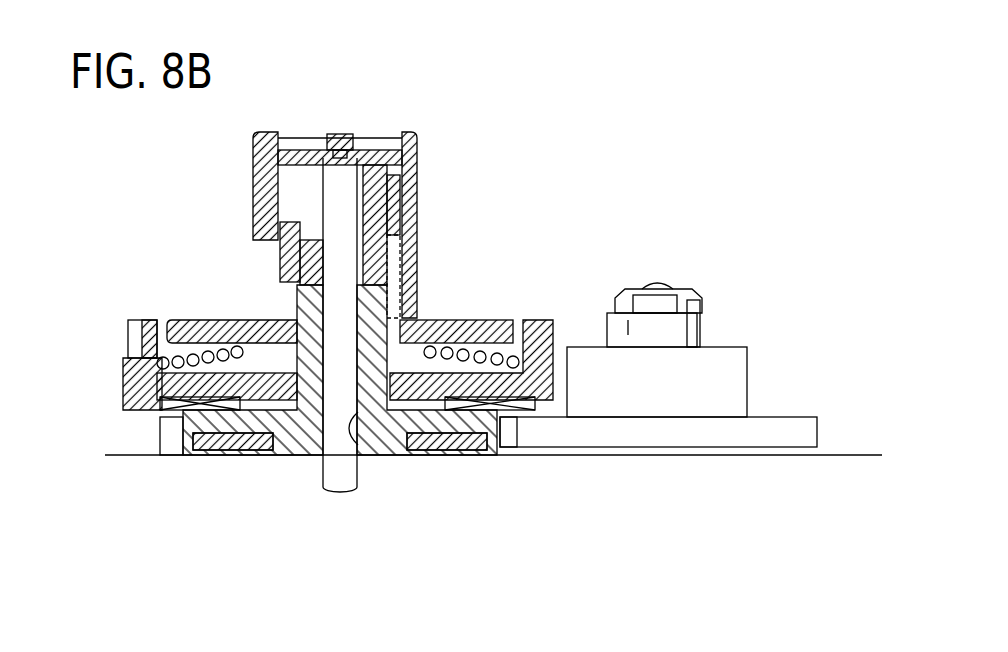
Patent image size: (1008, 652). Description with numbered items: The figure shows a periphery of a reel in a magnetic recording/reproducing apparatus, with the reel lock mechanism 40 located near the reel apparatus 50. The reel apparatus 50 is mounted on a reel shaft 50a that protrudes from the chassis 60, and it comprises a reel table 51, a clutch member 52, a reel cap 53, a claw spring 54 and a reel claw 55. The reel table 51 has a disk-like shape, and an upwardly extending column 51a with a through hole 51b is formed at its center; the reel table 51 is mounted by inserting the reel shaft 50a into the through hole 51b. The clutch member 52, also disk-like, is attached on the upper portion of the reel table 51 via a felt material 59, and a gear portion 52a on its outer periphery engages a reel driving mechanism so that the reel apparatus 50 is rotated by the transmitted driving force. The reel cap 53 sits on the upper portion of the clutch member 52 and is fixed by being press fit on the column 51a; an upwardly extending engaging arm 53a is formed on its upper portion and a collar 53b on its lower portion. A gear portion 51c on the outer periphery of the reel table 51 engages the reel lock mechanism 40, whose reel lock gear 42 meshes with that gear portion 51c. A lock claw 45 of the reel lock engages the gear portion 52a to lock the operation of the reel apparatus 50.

The reel lock mechanism 40 is at (718, 303).
The reel lock gear 42 is at (773, 428).
The lock claw 45 is at (620, 300).
The reel apparatus 50 is at (423, 192).
The reel shaft 50a is at (348, 489).
The reel table 51 is at (272, 456).
The column 51a is at (300, 300).
The through hole 51b is at (363, 457).
The gear portion 51c is at (160, 437).
The clutch member 52 is at (147, 380).
The gear portion 52a is at (128, 330).
The reel cap 53 is at (403, 252).
The engaging arm 53a is at (405, 168).
The collar 53b is at (470, 318).
The claw spring 54 is at (280, 262).
The reel claw 55 is at (253, 170).
The felt material 59 is at (200, 453).
The chassis 60 is at (848, 460).